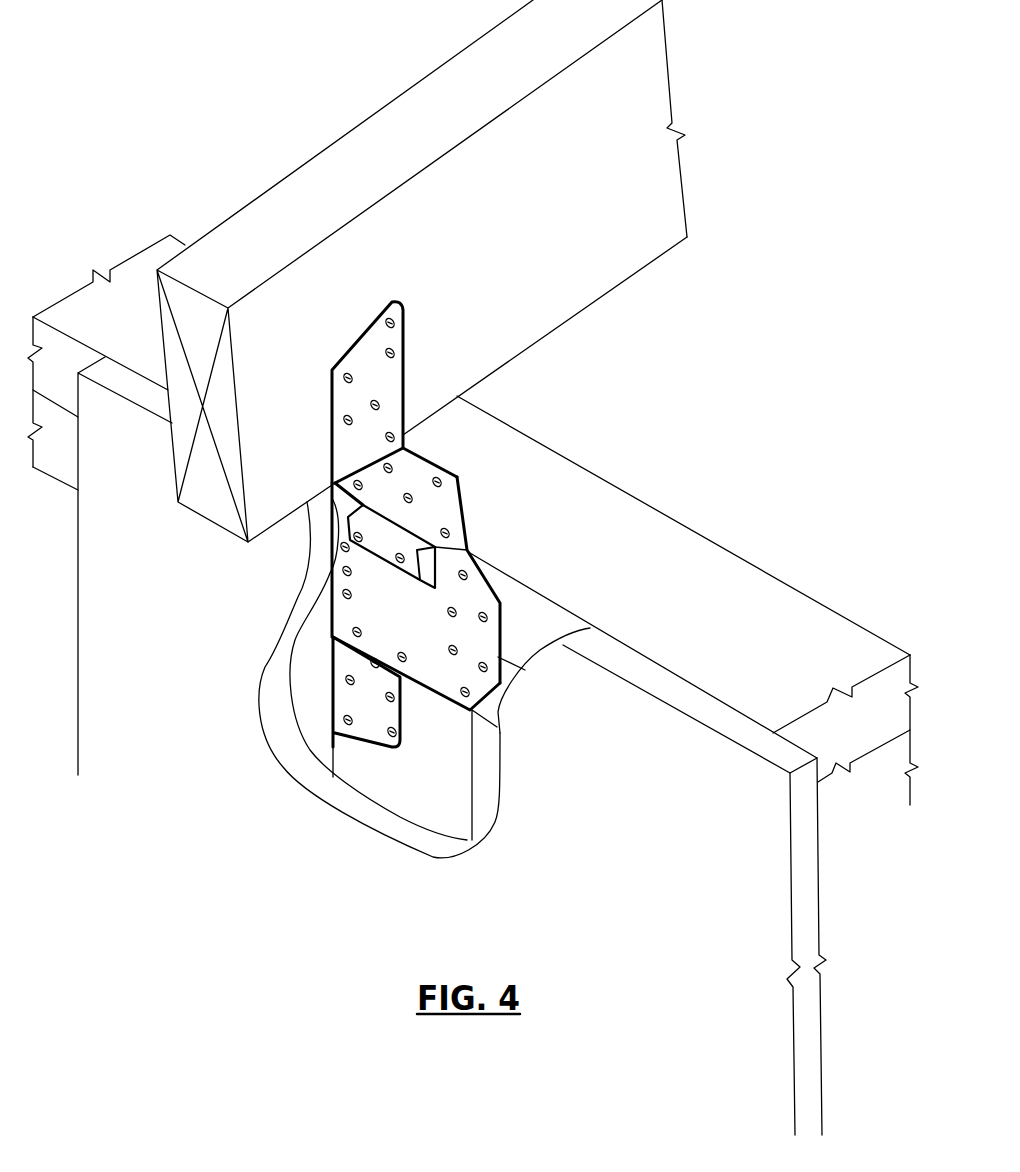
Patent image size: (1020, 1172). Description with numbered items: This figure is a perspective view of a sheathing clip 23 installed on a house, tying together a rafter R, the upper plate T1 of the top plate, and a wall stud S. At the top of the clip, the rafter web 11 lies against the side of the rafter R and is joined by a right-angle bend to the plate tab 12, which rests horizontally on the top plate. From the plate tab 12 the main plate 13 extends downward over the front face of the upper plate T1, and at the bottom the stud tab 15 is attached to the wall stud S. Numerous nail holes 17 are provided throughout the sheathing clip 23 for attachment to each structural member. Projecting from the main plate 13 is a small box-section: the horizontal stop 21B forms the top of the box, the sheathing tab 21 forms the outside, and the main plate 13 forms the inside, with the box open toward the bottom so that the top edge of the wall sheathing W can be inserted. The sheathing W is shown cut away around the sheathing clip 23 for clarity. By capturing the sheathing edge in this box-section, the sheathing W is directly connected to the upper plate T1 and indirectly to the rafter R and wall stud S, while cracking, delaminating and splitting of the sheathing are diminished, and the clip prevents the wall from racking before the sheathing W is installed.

The rafter R is at (638, 128).
The sheathing W is at (285, 648).
The wall stud S is at (438, 810).
The upper plate of top plate T1 is at (758, 605).
The rafter web 11 is at (380, 390).
The plate tab 12 is at (417, 467).
The horizontal stop 21B is at (403, 533).
The sheathing tab 21 is at (450, 570).
The main plate 13 is at (477, 600).
The sheathing clip 23 is at (503, 583).
The stud tab 15 is at (350, 705).
The nail holes 17 is at (352, 572).